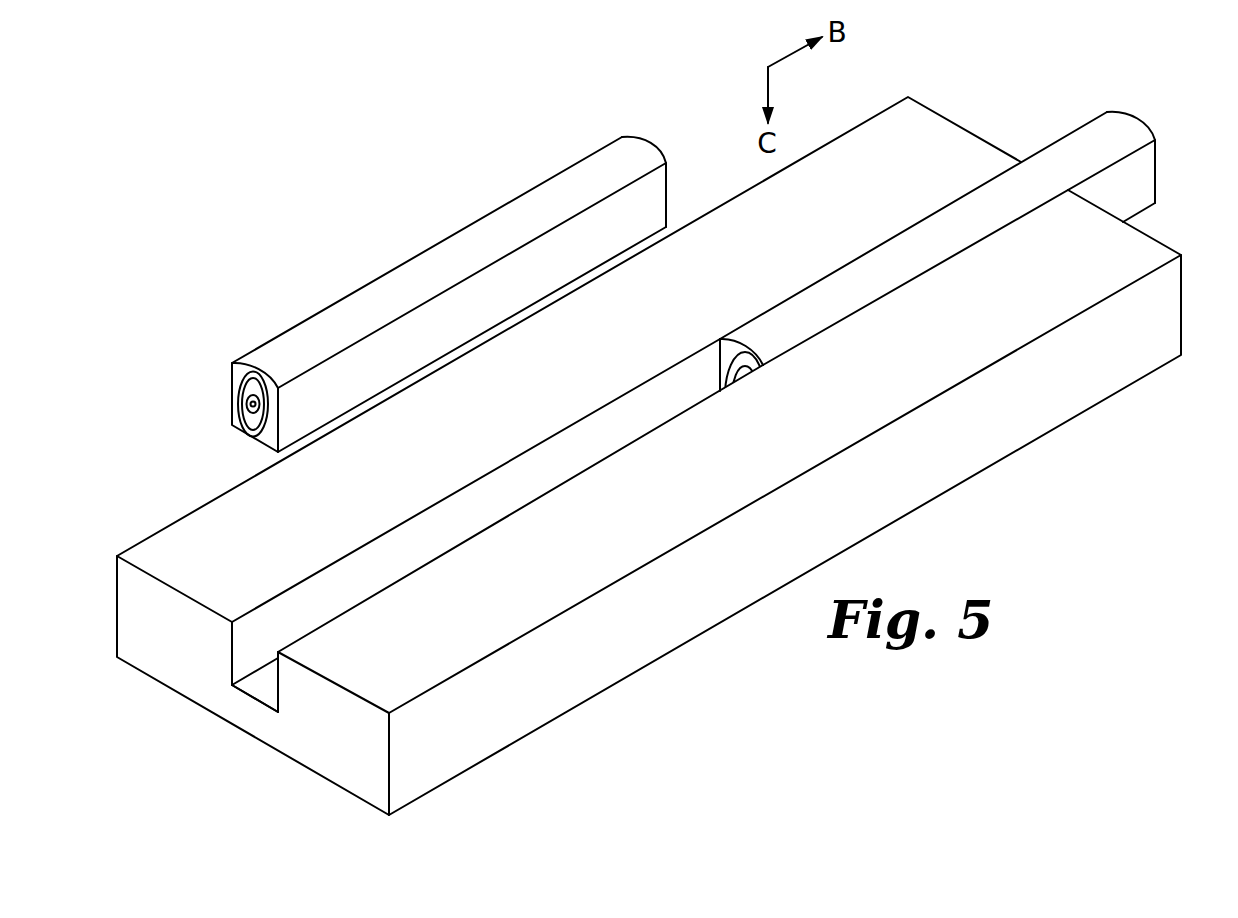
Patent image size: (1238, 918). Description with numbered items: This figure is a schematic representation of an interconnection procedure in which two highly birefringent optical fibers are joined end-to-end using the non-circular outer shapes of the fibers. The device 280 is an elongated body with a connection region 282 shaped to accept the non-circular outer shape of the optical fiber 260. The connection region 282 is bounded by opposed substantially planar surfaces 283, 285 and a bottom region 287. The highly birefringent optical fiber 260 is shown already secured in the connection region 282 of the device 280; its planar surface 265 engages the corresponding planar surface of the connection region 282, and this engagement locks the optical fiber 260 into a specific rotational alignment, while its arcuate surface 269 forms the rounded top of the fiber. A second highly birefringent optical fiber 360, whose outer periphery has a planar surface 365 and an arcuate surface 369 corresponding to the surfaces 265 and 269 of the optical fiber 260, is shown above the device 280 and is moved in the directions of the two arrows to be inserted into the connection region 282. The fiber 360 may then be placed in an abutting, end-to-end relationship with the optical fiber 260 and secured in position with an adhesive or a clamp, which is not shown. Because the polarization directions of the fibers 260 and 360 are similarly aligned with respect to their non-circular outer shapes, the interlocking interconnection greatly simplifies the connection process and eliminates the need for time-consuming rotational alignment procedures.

The device 280 is at (649, 456).
The connection region 282 is at (454, 567).
The planar surface 283 is at (238, 645).
The planar surface 285 is at (274, 666).
The bottom region 287 is at (268, 701).
The second highly birefringent optical fiber 360 is at (479, 259).
The planar surface 365 is at (660, 203).
The arcuate surface 369 is at (636, 140).
The highly birefringent optical fiber 260 is at (977, 243).
The planar surface 265 is at (1145, 158).
The arcuate surface 269 is at (1123, 112).